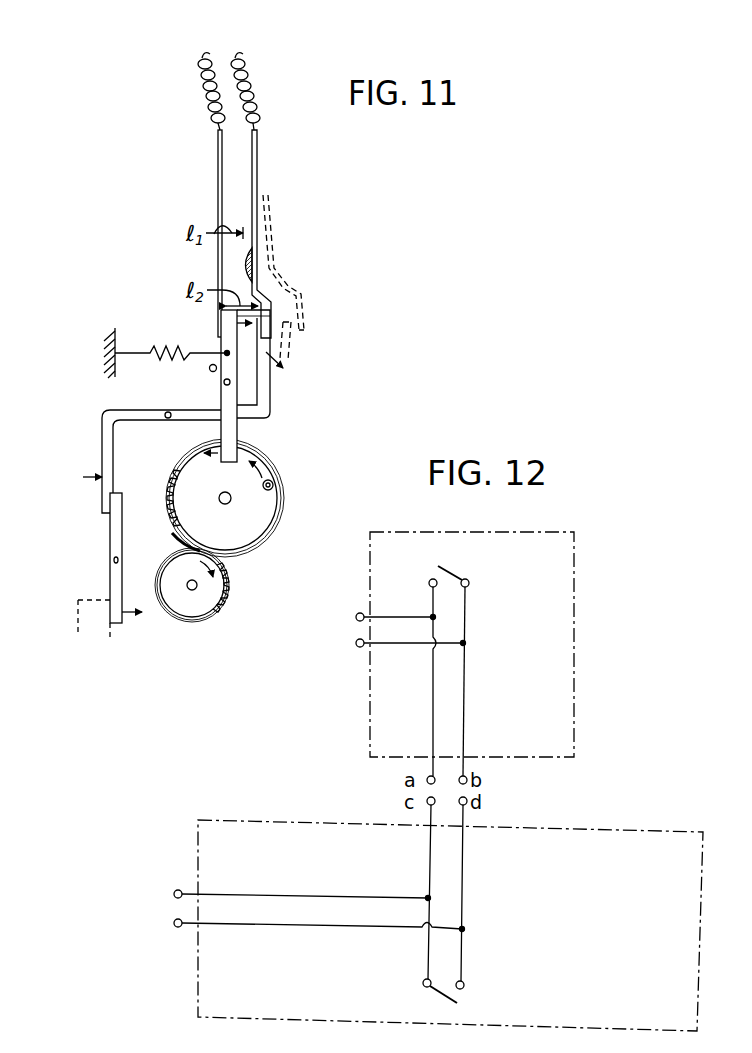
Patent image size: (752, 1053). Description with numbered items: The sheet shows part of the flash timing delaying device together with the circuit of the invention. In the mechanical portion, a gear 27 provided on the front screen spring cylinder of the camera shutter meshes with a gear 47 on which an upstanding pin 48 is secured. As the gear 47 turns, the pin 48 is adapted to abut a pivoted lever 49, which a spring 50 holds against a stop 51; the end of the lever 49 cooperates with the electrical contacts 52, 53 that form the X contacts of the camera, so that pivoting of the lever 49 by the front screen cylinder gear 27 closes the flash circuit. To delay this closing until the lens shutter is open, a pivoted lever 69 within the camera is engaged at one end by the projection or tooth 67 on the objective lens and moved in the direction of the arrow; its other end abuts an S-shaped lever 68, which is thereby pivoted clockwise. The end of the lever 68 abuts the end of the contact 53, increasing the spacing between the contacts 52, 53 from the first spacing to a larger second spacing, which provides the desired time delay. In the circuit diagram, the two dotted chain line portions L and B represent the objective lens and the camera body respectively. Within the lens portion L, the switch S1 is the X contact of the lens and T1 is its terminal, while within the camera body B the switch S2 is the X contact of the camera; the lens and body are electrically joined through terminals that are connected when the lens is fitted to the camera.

In FIG. 11, the electrical contact 52 is at (218, 160).
In FIG. 11, the electrical contact 53 is at (258, 159).
In FIG. 11, the spring 50 is at (137, 353).
In FIG. 11, the stop 51 is at (209, 369).
In FIG. 11, the lever 49 is at (221, 398).
In FIG. 11, the S-shaped lever 68 is at (105, 424).
In FIG. 11, the pivoted lever 69 is at (122, 527).
In FIG. 11, the projection 67 is at (78, 624).
In FIG. 11, the upstanding pin 48 is at (274, 482).
In FIG. 11, the gear 47 is at (268, 527).
In FIG. 11, the gear 27 is at (211, 610).
In FIG. 12, the terminal for X contact of the lens T1 is at (399, 630).
In FIG. 12, the X contact of the lens S1 is at (460, 574).
In FIG. 12, the X contact of the camera S2 is at (455, 999).
In FIG. 12, the objective lens L is at (574, 660).
In FIG. 12, the camera body B is at (701, 925).